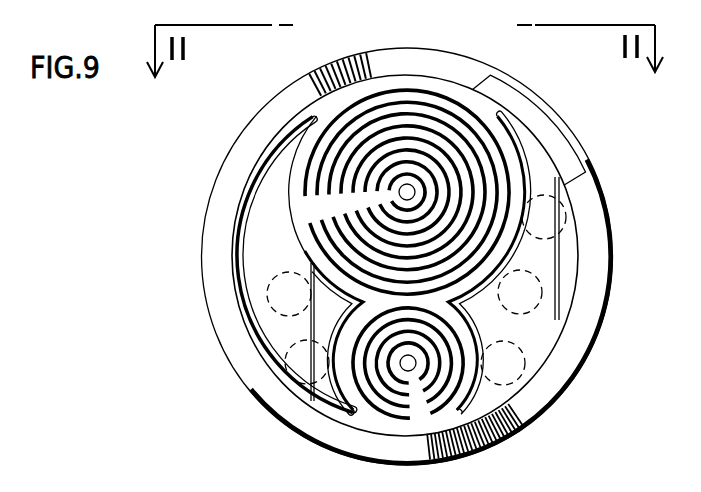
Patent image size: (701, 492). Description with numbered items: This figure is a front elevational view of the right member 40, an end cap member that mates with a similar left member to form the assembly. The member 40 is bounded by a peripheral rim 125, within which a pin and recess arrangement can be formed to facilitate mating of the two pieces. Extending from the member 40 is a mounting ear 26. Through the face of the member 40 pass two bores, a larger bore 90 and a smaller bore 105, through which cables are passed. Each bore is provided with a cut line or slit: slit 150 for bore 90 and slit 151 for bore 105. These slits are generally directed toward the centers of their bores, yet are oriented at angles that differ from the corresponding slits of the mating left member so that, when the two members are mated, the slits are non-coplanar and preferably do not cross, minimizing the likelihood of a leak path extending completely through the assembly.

The mounting ear 26 is at (535, 117).
The right member 40 is at (606, 304).
The bore 90 is at (407, 192).
The bore 105 is at (408, 363).
The peripheral rim 125 is at (577, 373).
The cut line or slit 150 is at (407, 192).
The cut line or slit 151 is at (408, 363).